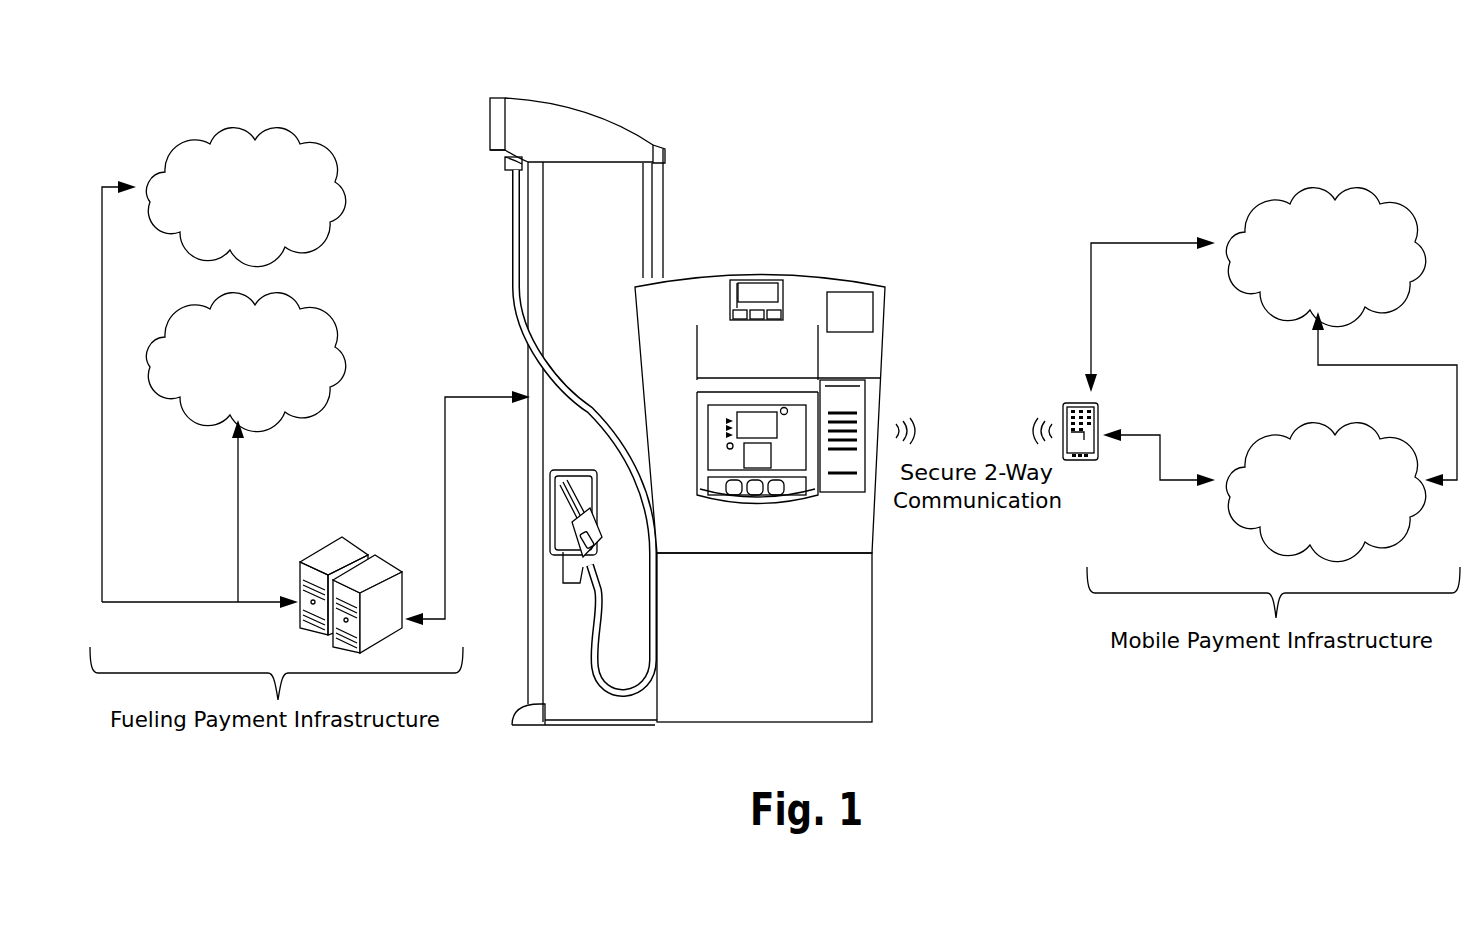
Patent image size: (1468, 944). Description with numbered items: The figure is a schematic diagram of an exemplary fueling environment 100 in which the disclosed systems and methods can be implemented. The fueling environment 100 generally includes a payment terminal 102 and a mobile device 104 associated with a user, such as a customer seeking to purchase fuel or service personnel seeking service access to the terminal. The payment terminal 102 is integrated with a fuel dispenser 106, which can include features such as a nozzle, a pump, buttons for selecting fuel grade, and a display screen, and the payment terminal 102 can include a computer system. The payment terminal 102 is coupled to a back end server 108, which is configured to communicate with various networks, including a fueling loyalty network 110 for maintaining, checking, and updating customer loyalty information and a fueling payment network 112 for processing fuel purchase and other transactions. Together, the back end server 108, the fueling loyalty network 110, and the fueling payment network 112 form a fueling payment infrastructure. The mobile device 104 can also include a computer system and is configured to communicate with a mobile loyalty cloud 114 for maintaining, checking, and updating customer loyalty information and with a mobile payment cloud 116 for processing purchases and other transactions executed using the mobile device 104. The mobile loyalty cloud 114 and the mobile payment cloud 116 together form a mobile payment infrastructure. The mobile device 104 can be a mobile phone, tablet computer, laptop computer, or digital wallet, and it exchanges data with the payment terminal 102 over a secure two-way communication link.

The fueling environment 100 is at (1010, 178).
The payment terminal 102 is at (718, 427).
The mobile device 104 is at (1065, 403).
The fuel dispenser 106 is at (563, 245).
The back end server 108 is at (333, 560).
The fueling loyalty network 110 is at (225, 145).
The fueling payment network 112 is at (177, 317).
The mobile loyalty cloud 114 is at (1377, 442).
The mobile payment cloud 116 is at (1378, 213).